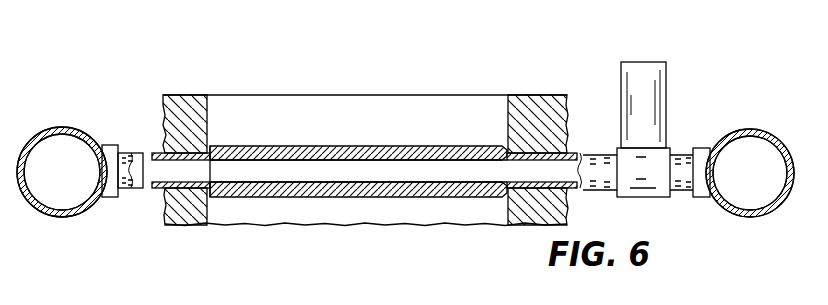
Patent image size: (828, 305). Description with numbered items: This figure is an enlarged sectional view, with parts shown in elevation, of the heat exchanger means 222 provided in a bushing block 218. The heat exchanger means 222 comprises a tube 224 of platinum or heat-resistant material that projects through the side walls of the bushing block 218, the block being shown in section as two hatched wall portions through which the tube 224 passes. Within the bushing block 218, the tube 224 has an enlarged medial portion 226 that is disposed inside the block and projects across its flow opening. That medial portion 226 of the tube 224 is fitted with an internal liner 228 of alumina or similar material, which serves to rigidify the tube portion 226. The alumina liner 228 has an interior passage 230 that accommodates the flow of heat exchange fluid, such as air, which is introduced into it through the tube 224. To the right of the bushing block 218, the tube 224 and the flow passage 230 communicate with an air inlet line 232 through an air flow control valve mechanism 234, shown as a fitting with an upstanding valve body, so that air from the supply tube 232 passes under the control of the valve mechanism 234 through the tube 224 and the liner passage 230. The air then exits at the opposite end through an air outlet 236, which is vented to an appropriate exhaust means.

The bushing block 218 is at (188, 94).
The heat exchanger means 222 is at (675, 112).
The tube 224 is at (592, 153).
The enlarged medial portion 226 is at (287, 146).
The internal liner 228 is at (380, 156).
The interior passage 230 is at (393, 160).
The air inlet line 232 is at (770, 129).
The air flow control valve mechanism 234 is at (645, 68).
The air outlet 236 is at (97, 110).